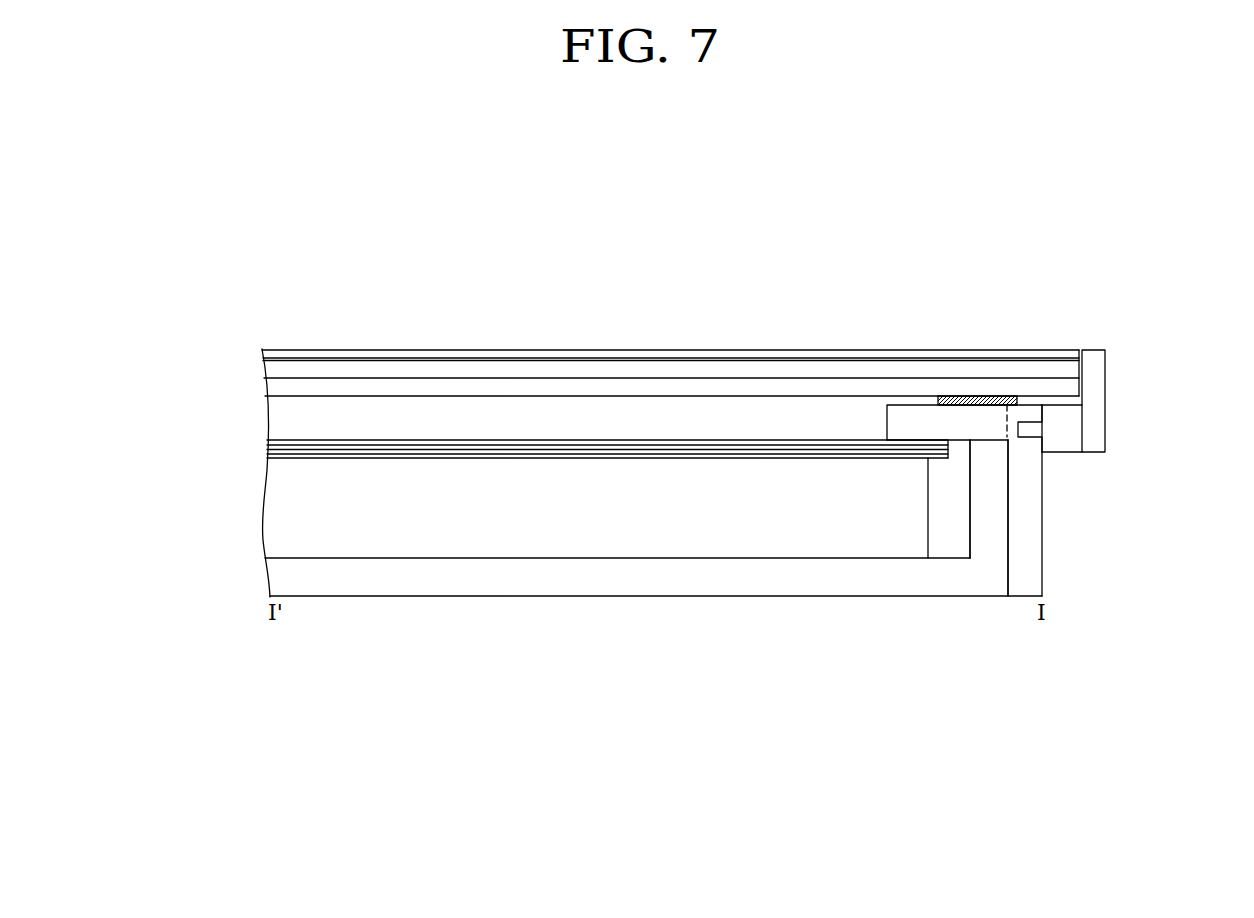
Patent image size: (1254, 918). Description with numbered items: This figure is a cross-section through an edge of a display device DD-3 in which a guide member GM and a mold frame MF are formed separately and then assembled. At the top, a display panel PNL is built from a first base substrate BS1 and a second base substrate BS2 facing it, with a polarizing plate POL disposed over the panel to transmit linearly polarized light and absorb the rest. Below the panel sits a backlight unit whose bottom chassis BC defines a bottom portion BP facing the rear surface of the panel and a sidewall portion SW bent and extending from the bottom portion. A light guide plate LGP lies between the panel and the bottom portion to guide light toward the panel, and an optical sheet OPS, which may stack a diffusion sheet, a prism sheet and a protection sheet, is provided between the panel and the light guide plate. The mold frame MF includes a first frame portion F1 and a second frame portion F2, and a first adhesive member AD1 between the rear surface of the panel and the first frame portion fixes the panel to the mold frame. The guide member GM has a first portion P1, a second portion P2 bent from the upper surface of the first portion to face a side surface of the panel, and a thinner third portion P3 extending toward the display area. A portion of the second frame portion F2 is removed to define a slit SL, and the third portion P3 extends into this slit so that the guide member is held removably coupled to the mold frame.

The display device DD-3 is at (888, 237).
The display panel PNL is at (161, 355).
The polarizing plate POL is at (261, 352).
The second base substrate BS2 is at (262, 368).
The first base substrate BS1 is at (262, 388).
The first adhesive member AD1 is at (973, 395).
The slit SL is at (1005, 400).
The guide member GM is at (1183, 377).
The first portion P1 is at (1073, 445).
The second portion P2 is at (1098, 377).
The third portion P3 is at (1033, 428).
The optical sheet OPS is at (262, 449).
The light guide plate LGP is at (279, 513).
The mold frame MF is at (1183, 505).
The first frame portion F1 is at (958, 441).
The second frame portion F2 is at (1023, 571).
The bottom chassis BC is at (973, 673).
The bottom portion BP is at (892, 585).
The sidewall portion SW is at (968, 532).